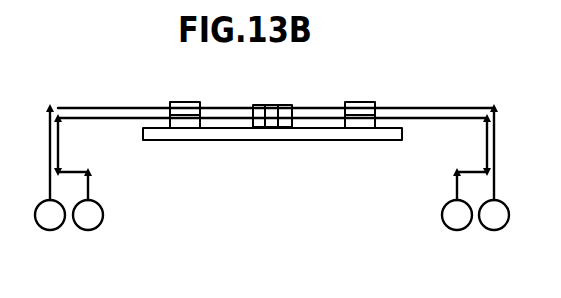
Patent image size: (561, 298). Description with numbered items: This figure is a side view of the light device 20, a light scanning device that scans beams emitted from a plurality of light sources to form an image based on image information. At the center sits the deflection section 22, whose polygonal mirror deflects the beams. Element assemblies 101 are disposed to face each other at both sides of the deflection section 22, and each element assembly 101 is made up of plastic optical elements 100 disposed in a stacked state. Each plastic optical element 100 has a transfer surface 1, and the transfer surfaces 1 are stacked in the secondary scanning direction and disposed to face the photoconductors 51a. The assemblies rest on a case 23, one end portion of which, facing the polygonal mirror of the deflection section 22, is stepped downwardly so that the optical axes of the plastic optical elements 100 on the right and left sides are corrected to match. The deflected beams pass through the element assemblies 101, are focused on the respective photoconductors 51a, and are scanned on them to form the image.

The transfer surface 1 is at (378, 106).
The light device 20 is at (468, 52).
The deflection section 22 is at (266, 104).
The case 23 is at (233, 140).
The plastic optical element 100 is at (188, 110).
The element assembly 101 is at (170, 102).
The photoconductor 51a is at (315, 118).